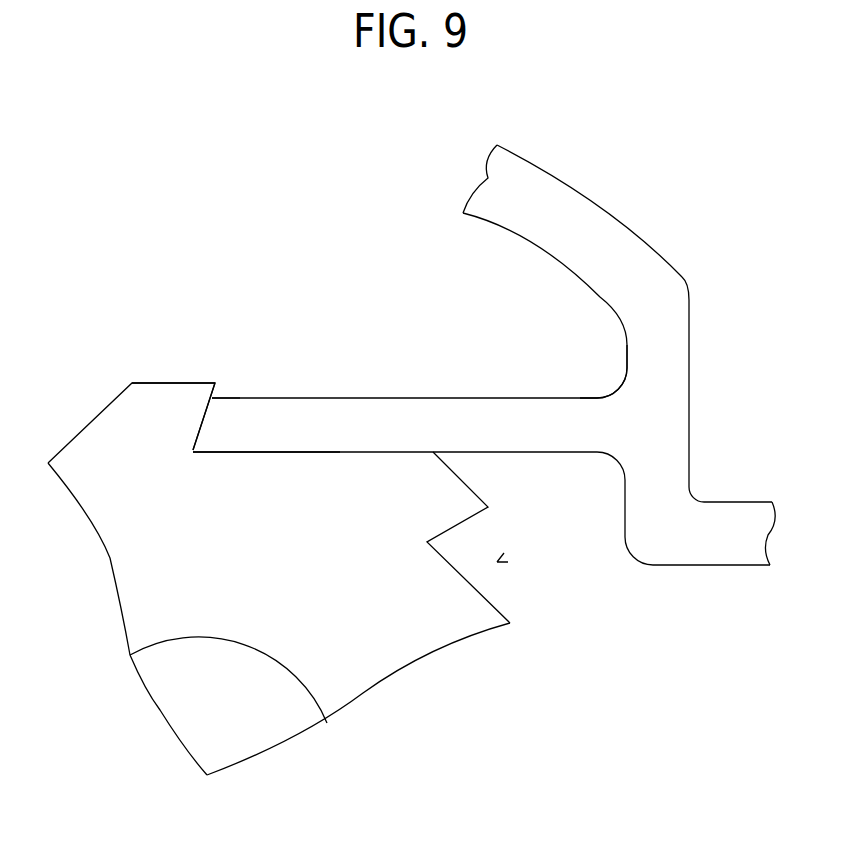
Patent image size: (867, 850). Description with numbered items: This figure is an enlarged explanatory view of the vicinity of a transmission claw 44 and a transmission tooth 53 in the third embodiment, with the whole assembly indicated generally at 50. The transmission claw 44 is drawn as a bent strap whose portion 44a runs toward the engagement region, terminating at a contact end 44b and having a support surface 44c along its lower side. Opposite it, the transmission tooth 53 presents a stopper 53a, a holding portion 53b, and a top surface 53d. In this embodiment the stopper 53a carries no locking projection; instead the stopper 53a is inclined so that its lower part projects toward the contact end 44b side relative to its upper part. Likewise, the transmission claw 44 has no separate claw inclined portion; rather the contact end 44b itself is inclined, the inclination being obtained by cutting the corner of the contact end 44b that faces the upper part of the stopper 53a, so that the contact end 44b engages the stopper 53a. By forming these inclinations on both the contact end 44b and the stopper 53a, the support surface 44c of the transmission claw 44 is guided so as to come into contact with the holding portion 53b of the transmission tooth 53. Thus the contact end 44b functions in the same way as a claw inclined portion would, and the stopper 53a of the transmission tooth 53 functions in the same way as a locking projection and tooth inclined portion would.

The transmission claw 44 is at (435, 418).
The bent portion of lock lever 44a is at (585, 417).
The contact end 44b is at (213, 423).
The support surface 44c is at (317, 452).
The sliding direction 50 is at (497, 562).
The transmission tooth 53 is at (158, 408).
The stopper 53a is at (185, 435).
The holding portion 53b is at (285, 458).
The top surface 53d is at (173, 383).